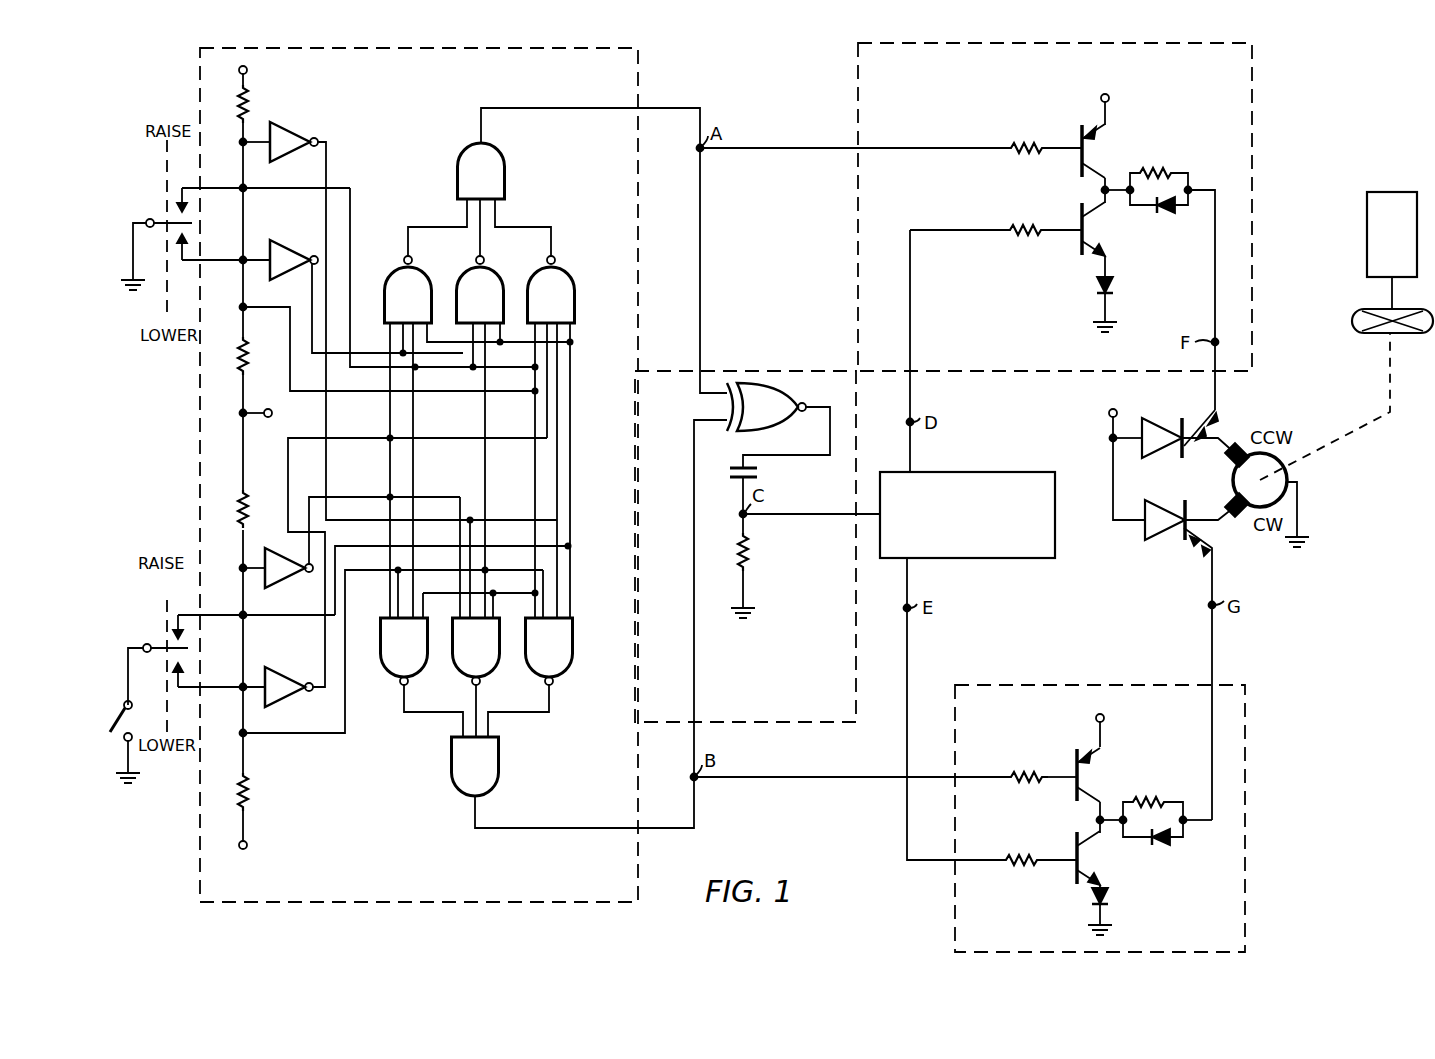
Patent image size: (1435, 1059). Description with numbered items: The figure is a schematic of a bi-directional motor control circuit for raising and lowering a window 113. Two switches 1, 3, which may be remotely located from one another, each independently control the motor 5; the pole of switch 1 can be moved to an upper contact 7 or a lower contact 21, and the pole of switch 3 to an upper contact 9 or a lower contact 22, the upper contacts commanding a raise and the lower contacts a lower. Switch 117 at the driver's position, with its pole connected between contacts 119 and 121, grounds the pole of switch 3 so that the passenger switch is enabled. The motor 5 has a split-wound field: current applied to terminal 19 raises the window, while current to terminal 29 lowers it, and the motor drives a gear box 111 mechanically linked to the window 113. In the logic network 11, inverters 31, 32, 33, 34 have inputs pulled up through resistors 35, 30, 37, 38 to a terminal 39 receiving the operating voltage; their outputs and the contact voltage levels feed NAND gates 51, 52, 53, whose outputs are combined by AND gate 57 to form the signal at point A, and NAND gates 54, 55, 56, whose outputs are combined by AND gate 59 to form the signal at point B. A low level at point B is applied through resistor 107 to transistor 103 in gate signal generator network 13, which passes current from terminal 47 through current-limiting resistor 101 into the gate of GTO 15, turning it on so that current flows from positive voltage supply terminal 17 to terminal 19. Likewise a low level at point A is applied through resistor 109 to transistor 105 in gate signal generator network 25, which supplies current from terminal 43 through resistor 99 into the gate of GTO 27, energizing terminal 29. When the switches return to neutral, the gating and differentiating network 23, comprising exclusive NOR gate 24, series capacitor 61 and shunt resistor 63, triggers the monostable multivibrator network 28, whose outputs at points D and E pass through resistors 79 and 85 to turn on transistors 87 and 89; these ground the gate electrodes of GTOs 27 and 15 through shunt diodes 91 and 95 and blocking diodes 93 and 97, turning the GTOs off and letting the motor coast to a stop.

The switch 1 is at (166, 212).
The switch 3 is at (164, 629).
The motor 5 is at (1229, 487).
The upper contact 7 is at (190, 207).
The upper contact 9 is at (188, 636).
The logic network 11 is at (380, 855).
The gate signal generator network 13 is at (1015, 933).
The GTO 15 is at (1166, 544).
The positive voltage supply terminal 17 is at (1108, 415).
The motor terminal 19 is at (1236, 516).
The lower contact 21 is at (190, 240).
The lower contact 22 is at (188, 669).
The gating and differentiating network 23 is at (807, 650).
The exclusive NOR gate 24 is at (782, 425).
The gate signal generator network 25 is at (962, 95).
The GTO 27 is at (1160, 422).
The monostable multivibrator network 28 is at (1014, 472).
The motor terminal 29 is at (1236, 448).
The pull-up resistor 30 is at (248, 360).
The inverter 31 is at (290, 135).
The inverter 32 is at (290, 253).
The inverter 33 is at (283, 580).
The inverter 34 is at (285, 672).
The pull-up resistor 35 is at (248, 103).
The pull-up resistor 37 is at (248, 514).
The pull-up resistor 38 is at (248, 792).
The terminal 39 is at (248, 70).
The terminal 43 is at (1109, 98).
The terminal 47 is at (1104, 718).
The NAND gate 51 is at (418, 263).
The NAND gate 52 is at (490, 263).
The NAND gate 53 is at (561, 263).
The NAND gate 54 is at (390, 680).
The NAND gate 55 is at (460, 680).
The NAND gate 56 is at (532, 680).
The AND gate 57 is at (515, 154).
The AND gate 59 is at (501, 762).
The capacitor 61 is at (760, 472).
The resistor 63 is at (750, 556).
The resistor 79 is at (1040, 218).
The resistor 85 is at (1034, 848).
The transistor 87 is at (1094, 234).
The transistor 89 is at (1092, 862).
The shunt diode 91 is at (1165, 212).
The blocking diode 93 is at (1110, 288).
The shunt diode 95 is at (1170, 843).
The blocking diode 97 is at (1106, 898).
The current-limiting resistor 99 is at (1170, 172).
The current-limiting resistor 101 is at (1158, 800).
The transistor 103 is at (1090, 788).
The transistor 105 is at (1095, 160).
The resistor 107 is at (1040, 765).
The resistor 109 is at (1038, 137).
The gear box 111 is at (1353, 319).
The window 113 is at (1367, 243).
The switch 117 is at (110, 731).
The contact 119 is at (124, 704).
The contact 121 is at (122, 749).